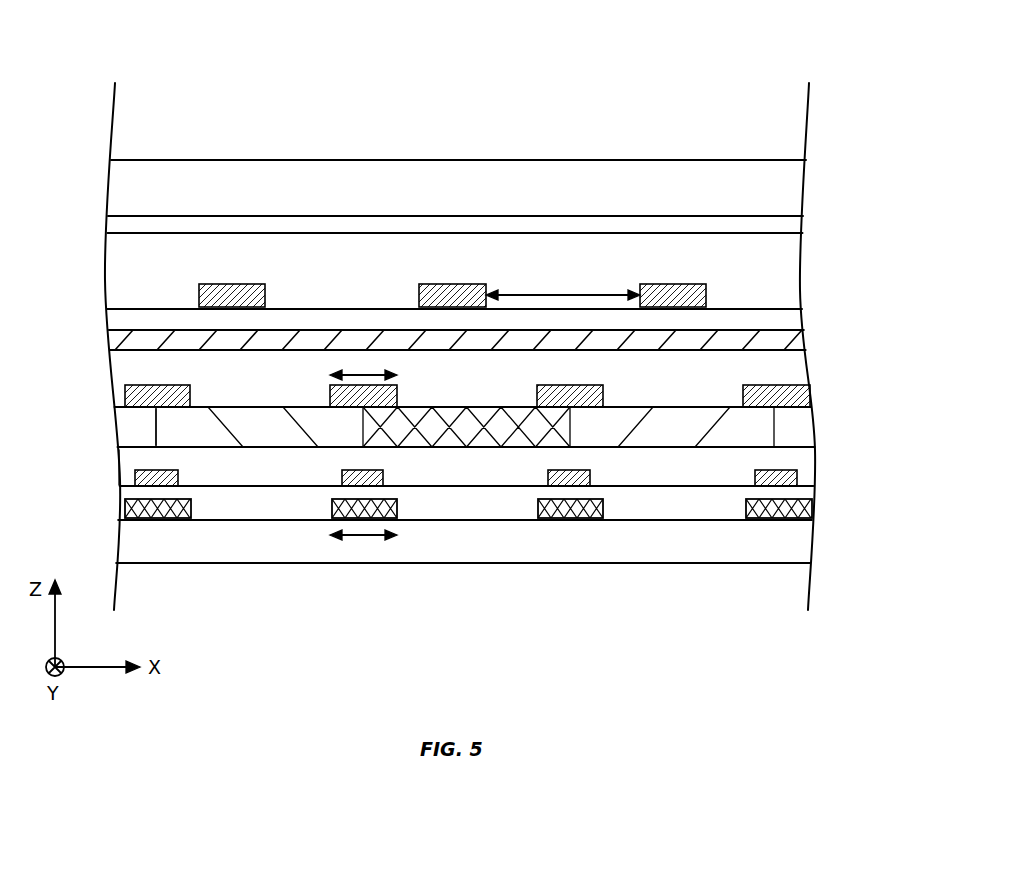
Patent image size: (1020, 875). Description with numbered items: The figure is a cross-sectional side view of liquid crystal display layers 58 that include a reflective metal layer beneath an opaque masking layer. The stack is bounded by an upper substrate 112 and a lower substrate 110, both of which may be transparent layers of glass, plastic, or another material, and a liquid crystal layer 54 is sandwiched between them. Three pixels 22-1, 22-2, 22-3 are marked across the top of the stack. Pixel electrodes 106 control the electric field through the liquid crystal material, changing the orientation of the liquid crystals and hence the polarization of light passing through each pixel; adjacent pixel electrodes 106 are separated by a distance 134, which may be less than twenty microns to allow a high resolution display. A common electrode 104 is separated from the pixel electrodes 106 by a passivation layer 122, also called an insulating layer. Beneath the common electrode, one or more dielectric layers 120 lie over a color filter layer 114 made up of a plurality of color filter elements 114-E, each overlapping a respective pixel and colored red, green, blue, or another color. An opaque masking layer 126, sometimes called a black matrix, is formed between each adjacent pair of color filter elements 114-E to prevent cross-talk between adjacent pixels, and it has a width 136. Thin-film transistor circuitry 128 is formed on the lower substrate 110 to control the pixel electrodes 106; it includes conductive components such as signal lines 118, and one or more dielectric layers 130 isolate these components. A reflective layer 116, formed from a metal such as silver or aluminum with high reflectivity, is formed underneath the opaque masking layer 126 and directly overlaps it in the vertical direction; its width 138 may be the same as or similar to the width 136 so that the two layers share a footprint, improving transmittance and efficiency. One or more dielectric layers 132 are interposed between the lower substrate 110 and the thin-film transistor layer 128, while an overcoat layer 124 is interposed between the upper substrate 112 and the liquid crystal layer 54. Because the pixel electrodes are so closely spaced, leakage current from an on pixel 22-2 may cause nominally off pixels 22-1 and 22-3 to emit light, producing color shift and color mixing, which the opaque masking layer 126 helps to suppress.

The liquid crystal display layers 58 is at (781, 66).
The pixel 22-1 is at (335, 152).
The pixel 22-2 is at (567, 152).
The pixel 22-3 is at (795, 152).
The upper substrate 112 is at (787, 193).
The overcoat layer 124 is at (787, 226).
The liquid crystal layer 54 is at (787, 276).
The pixel electrodes 106 is at (419, 295).
The distance 134 is at (557, 294).
The passivation layer 122 is at (787, 320).
The common electrode 104 is at (787, 341).
The dielectric layers 120 is at (787, 373).
The opaque masking layer 126 is at (650, 397).
The width 136 is at (367, 374).
The color filter layer 114 is at (823, 407).
The color filter elements 114-E is at (168, 432).
The thin-film transistor circuitry 128 is at (823, 450).
The dielectric layers 130 is at (130, 462).
The signal lines 118 is at (640, 477).
The dielectric layers 132 is at (808, 494).
The reflective layer 116 is at (650, 510).
The width 138 is at (367, 536).
The lower substrate 110 is at (808, 548).